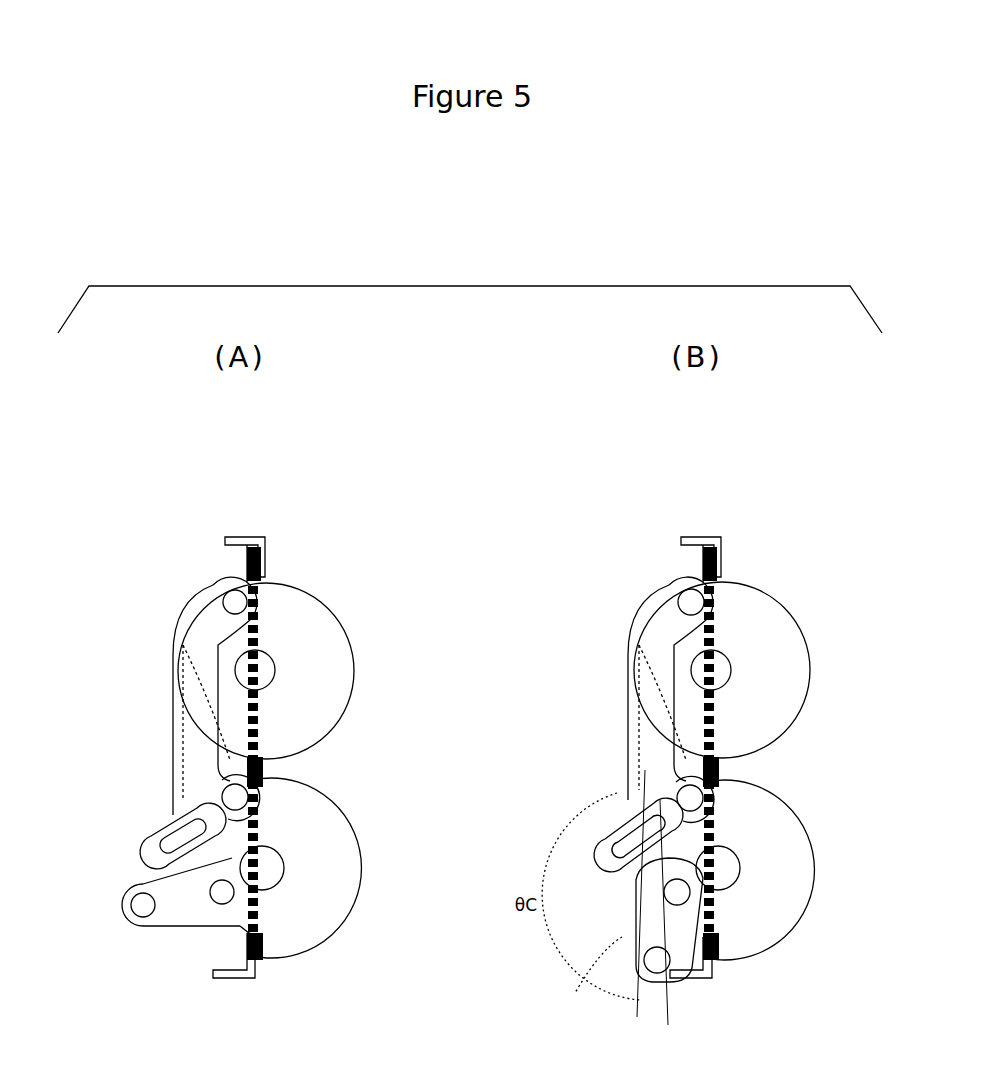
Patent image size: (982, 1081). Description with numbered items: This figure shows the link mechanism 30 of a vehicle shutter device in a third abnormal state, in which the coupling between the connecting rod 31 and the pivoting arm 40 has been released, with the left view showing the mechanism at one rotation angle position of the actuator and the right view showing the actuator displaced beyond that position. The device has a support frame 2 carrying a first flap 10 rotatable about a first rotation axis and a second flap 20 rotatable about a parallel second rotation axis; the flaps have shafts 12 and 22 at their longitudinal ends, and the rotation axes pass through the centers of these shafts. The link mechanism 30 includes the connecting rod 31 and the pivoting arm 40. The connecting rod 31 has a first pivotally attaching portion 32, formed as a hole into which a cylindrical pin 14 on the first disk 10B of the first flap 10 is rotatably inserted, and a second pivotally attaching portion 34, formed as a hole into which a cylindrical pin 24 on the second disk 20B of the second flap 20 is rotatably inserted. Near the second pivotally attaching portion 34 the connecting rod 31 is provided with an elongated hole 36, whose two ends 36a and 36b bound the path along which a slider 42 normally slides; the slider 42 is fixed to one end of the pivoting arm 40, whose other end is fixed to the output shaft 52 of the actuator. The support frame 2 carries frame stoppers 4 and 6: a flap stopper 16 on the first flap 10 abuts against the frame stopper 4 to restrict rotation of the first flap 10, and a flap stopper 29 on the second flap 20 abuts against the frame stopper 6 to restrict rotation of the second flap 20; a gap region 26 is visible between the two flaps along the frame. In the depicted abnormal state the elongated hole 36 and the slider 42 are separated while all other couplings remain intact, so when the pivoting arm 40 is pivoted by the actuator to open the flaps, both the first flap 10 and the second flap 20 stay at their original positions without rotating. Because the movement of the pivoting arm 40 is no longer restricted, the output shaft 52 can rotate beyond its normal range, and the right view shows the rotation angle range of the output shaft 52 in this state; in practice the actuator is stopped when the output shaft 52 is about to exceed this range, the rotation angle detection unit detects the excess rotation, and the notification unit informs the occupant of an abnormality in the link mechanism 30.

The support frame 2 is at (253, 527).
The frame stopper 4 is at (268, 556).
The frame stopper 6 is at (259, 972).
The first flap 10 is at (333, 604).
The first disk 10B is at (335, 636).
The shaft 12 is at (276, 669).
The pin 14 is at (230, 595).
The flap stopper 16 is at (243, 566).
The second flap 20 is at (349, 814).
The second disk 20B is at (352, 856).
The shaft 22 is at (282, 869).
The pin 24 is at (228, 788).
The wire intermediate portion 26 is at (264, 777).
The flap stopper 29 is at (268, 940).
The link mechanism 30 is at (134, 665).
The connecting rod 31 is at (180, 725).
The first pivotally attaching portion 32 is at (212, 608).
The second pivotally attaching portion 34 is at (215, 786).
The elongated hole 36 is at (162, 836).
The slot first end 36a is at (190, 822).
The slot second end 36b is at (170, 852).
The pivoting arm 40 is at (166, 930).
The slider 42 is at (134, 916).
The output shaft 52 is at (222, 906).